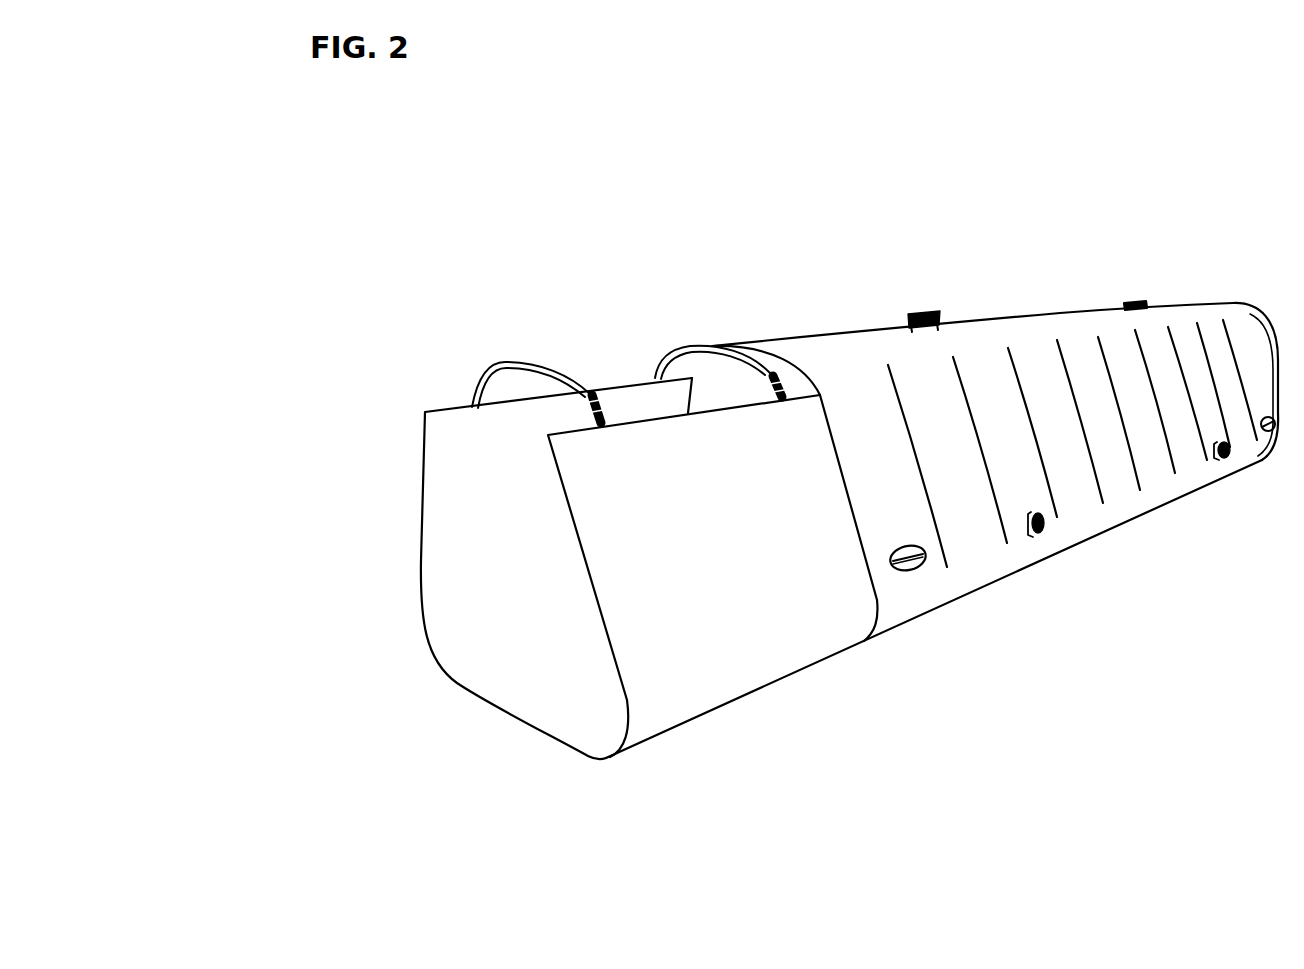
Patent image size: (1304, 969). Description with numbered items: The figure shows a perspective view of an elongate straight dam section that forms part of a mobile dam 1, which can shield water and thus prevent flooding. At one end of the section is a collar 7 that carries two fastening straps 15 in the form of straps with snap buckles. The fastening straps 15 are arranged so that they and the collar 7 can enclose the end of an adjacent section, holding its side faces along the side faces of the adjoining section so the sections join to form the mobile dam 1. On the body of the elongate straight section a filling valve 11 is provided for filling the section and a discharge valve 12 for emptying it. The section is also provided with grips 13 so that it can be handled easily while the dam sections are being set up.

The mobile dam 1 is at (762, 253).
The collar 7 is at (690, 687).
The filling valve 11 is at (917, 310).
The discharge valve 12 is at (1047, 533).
The grips 13 is at (917, 563).
The fastening straps 15 is at (498, 363).